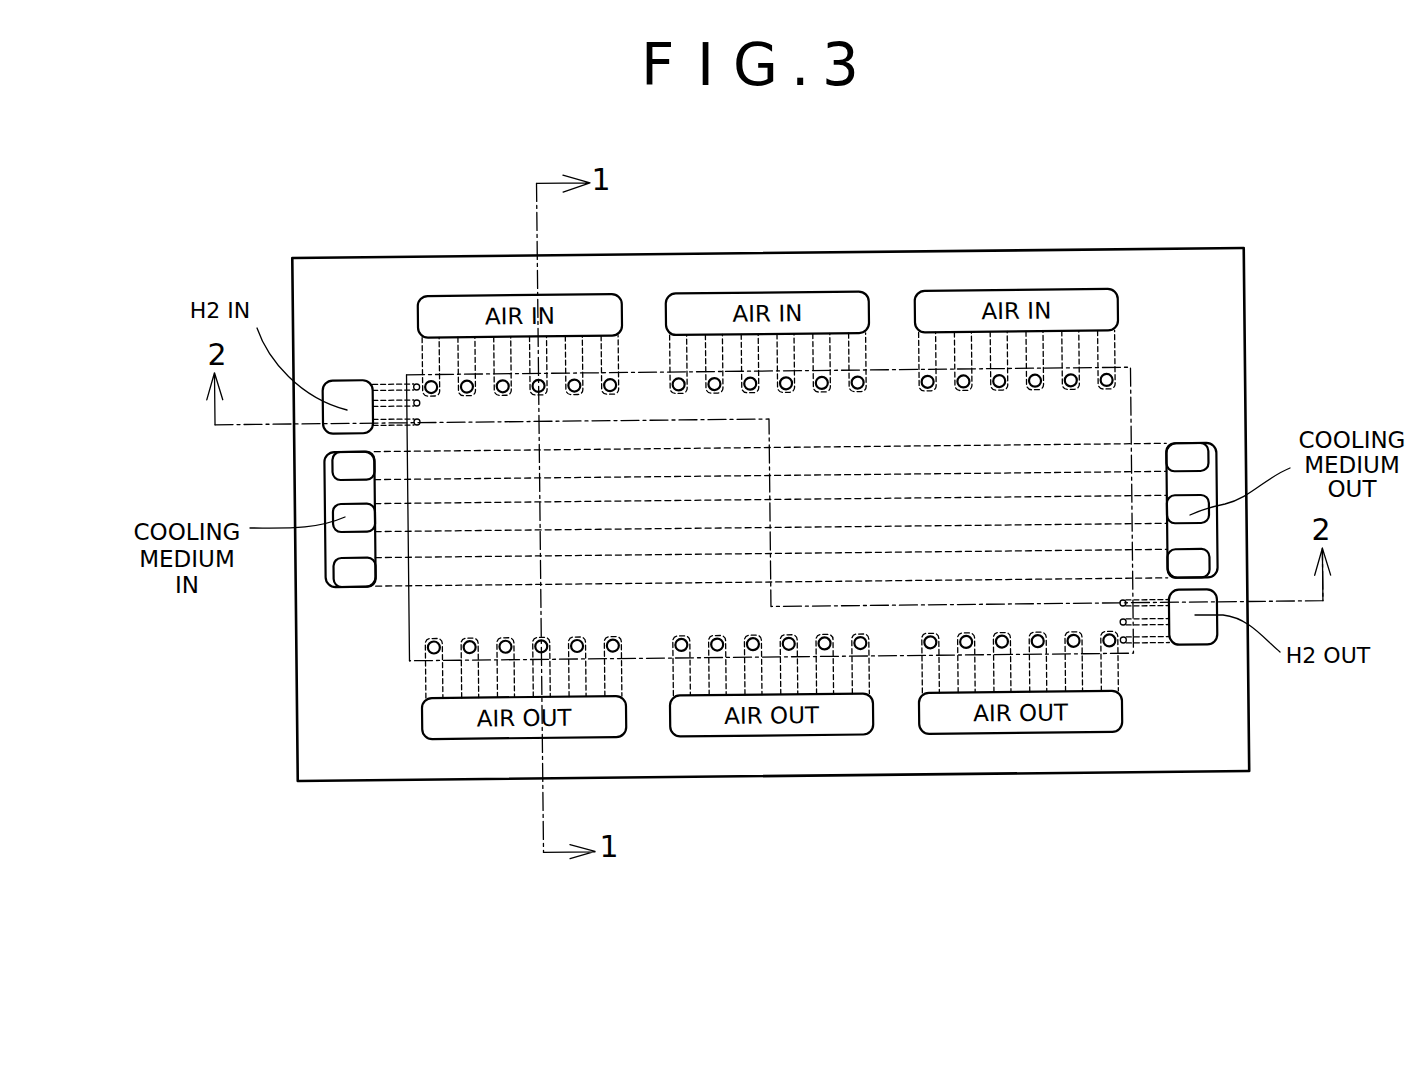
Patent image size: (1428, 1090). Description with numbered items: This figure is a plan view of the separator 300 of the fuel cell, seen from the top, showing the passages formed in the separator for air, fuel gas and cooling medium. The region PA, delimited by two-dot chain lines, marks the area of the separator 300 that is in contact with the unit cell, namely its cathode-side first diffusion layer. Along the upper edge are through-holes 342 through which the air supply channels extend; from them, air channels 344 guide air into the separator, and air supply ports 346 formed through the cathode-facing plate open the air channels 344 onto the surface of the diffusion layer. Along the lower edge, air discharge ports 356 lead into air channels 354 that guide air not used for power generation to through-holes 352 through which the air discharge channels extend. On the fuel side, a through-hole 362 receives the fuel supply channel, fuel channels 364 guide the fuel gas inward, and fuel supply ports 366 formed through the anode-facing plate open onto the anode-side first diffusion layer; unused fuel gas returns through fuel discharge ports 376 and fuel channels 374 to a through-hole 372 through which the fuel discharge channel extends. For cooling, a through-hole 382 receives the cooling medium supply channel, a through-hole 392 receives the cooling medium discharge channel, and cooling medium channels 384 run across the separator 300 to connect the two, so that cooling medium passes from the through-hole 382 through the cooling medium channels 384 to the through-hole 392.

The separator 300 is at (466, 226).
The region PA is at (1131, 403).
The through-holes 342 is at (585, 302).
The air channels 344 is at (618, 355).
The air supply ports 346 is at (620, 389).
The through-holes 352 is at (462, 735).
The air channels 354 is at (623, 673).
The air discharge ports 356 is at (617, 640).
The through-hole 362 is at (328, 386).
The fuel channels 364 is at (400, 387).
The fuel supply ports 366 is at (410, 385).
The through-hole 372 is at (1214, 623).
The fuel channels 374 is at (1153, 645).
The fuel discharge ports 376 is at (1127, 657).
The through-hole 382 is at (333, 481).
The cooling medium channels 384 is at (360, 558).
The through-hole 392 is at (1210, 478).